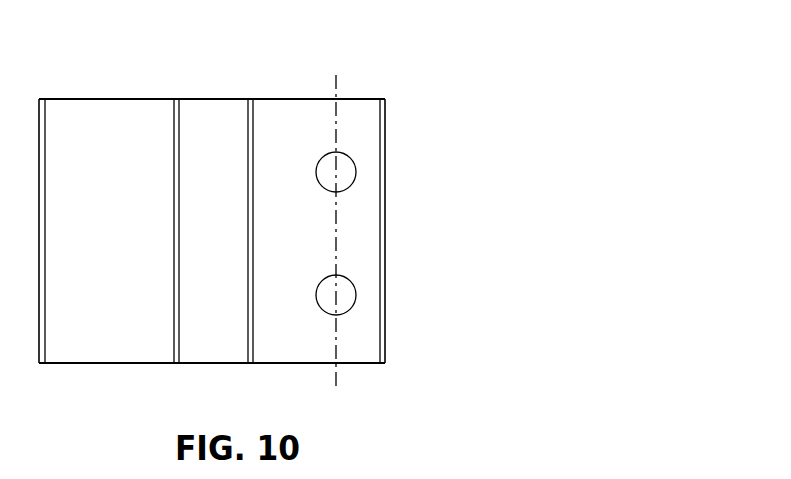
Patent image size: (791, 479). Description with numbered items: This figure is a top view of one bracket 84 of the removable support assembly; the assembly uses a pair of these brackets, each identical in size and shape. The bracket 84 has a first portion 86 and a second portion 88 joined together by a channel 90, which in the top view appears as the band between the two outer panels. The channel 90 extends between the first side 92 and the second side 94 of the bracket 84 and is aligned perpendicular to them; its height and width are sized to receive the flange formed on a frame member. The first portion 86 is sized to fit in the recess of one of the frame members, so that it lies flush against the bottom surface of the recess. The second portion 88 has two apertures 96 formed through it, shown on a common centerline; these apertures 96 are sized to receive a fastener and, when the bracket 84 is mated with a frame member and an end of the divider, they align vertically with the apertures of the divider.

The bracket 84 is at (417, 50).
The first portion 86 is at (121, 245).
The second portion 88 is at (310, 245).
The channel 90 is at (226, 245).
The first side 92 is at (108, 363).
The second side 94 is at (111, 99).
The aperture 96 is at (356, 172).